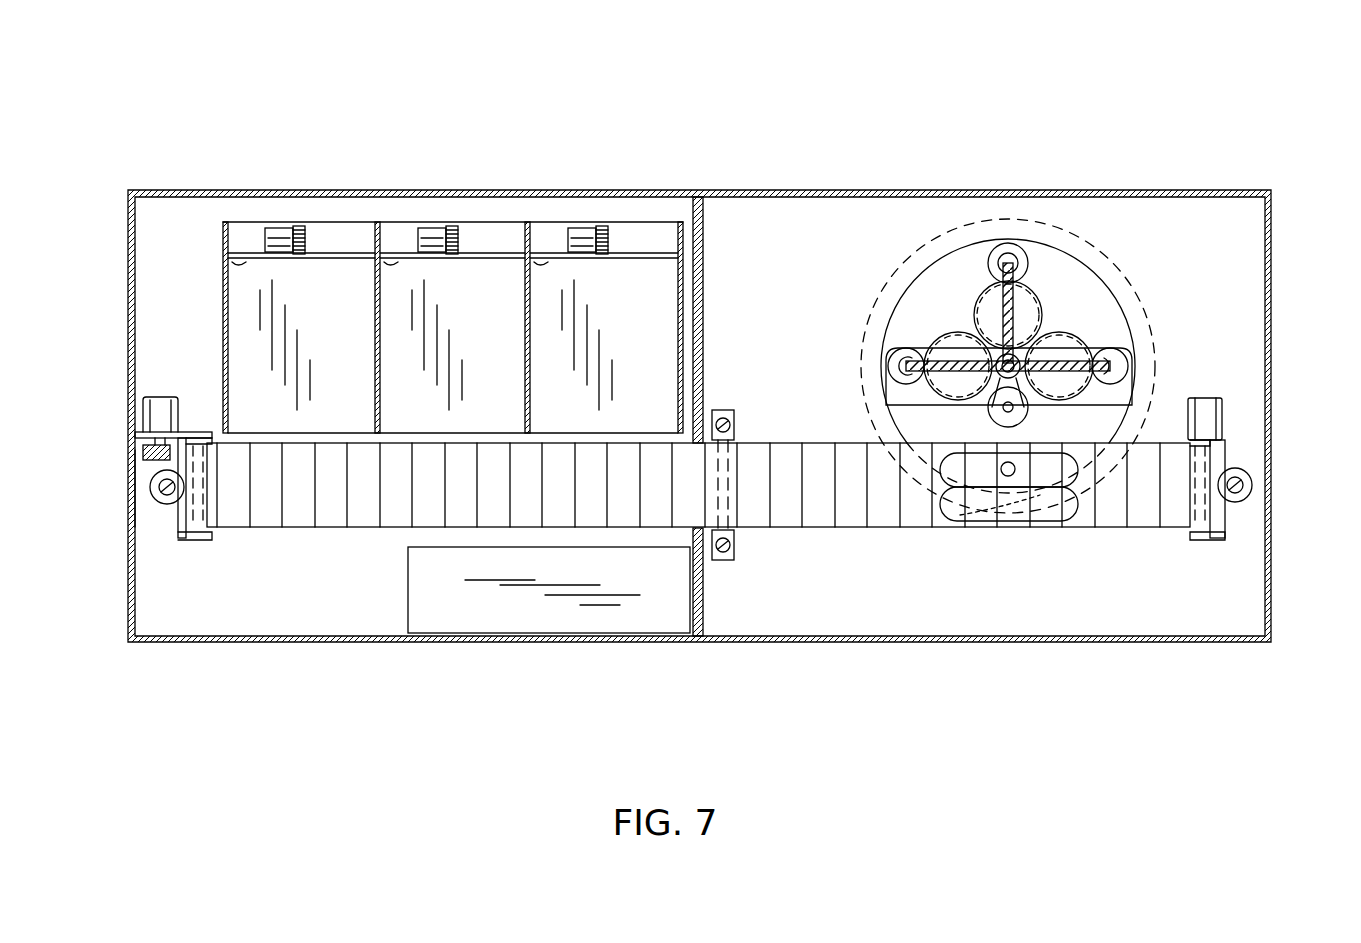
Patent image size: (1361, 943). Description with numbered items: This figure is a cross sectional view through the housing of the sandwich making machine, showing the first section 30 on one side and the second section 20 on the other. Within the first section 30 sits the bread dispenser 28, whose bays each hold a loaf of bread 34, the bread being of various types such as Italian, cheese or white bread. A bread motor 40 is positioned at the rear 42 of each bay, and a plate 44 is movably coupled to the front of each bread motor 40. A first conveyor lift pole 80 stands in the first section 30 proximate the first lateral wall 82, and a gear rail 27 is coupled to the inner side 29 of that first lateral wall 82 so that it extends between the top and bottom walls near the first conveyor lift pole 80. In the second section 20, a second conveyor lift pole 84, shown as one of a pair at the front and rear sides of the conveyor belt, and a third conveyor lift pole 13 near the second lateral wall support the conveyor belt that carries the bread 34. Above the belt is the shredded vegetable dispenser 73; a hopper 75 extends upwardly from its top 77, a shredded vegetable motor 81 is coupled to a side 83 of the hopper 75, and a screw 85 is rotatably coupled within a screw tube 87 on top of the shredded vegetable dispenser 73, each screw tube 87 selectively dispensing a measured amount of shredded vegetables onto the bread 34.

The third conveyor lift pole 13 is at (1252, 486).
The second section 20 is at (1062, 279).
The gear rail 27 is at (135, 435).
The bread dispenser 28 is at (228, 255).
The inner side 29 is at (140, 330).
The first section 30 is at (373, 168).
The loaf of bread 34 is at (955, 508).
The bread motor 40 is at (280, 228).
The rear 42 is at (340, 222).
The plate 44 is at (238, 262).
The shredded vegetable dispenser 73 is at (1050, 298).
The hopper 75 is at (937, 340).
The top 77 is at (1000, 345).
The first conveyor lift pole 80 is at (158, 489).
The shredded vegetable motor 81 is at (893, 358).
The first lateral wall 82 is at (130, 482).
The side 83 is at (1113, 340).
The second conveyor lift pole 84 is at (735, 410).
The screw 85 is at (950, 345).
The screw tube 87 is at (1037, 287).